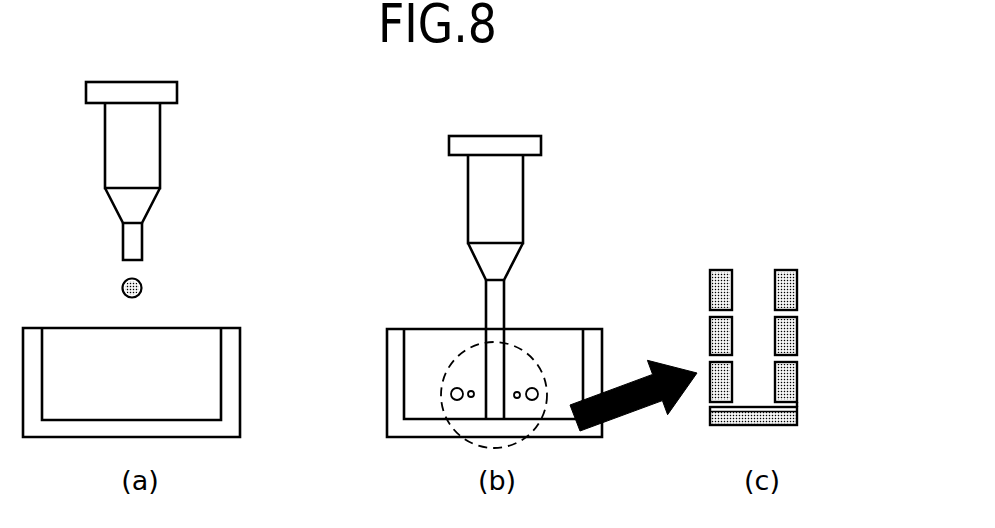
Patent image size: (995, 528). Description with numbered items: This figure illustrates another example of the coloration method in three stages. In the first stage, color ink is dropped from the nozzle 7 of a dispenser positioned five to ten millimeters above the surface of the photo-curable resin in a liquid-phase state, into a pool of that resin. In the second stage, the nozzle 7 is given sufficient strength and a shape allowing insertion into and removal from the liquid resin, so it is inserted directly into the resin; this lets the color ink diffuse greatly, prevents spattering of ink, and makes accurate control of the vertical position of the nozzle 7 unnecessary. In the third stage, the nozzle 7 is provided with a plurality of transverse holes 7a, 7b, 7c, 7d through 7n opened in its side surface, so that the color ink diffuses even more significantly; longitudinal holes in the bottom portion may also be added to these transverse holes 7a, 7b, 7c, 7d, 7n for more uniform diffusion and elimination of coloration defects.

The nozzle 7 is at (160, 170).
The transverse hole 7a is at (710, 307).
The transverse hole 7b is at (710, 355).
The transverse hole 7c is at (710, 405).
The transverse hole 7d is at (797, 308).
The transverse hole 7n is at (797, 403).